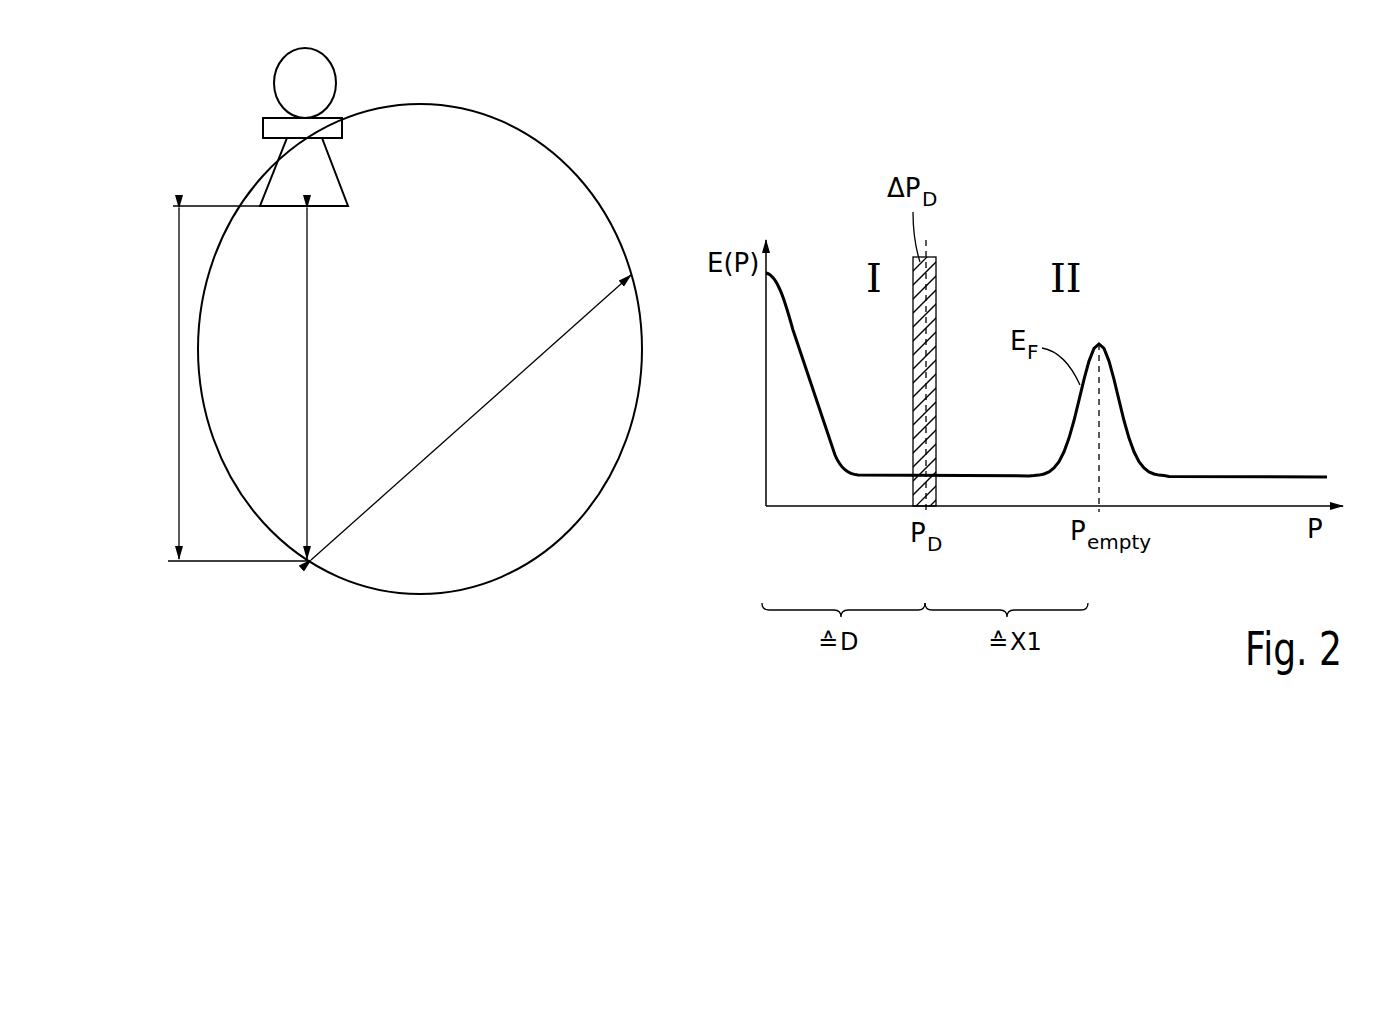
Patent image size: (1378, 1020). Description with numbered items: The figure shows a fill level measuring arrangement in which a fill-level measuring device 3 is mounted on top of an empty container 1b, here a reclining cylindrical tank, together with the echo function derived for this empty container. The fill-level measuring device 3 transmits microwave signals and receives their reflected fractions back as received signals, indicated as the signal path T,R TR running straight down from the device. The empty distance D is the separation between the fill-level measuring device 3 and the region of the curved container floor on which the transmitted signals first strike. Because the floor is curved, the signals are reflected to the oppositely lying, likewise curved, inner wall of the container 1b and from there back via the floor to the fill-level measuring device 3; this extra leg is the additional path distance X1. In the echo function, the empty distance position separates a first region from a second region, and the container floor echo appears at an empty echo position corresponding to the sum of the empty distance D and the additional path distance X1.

The fill-level measuring device 3 is at (283, 82).
The container 1b is at (516, 570).
The empty distance D is at (168, 383).
The microwave signals and received signals TR is at (285, 383).
The additional path distance X1 is at (471, 417).